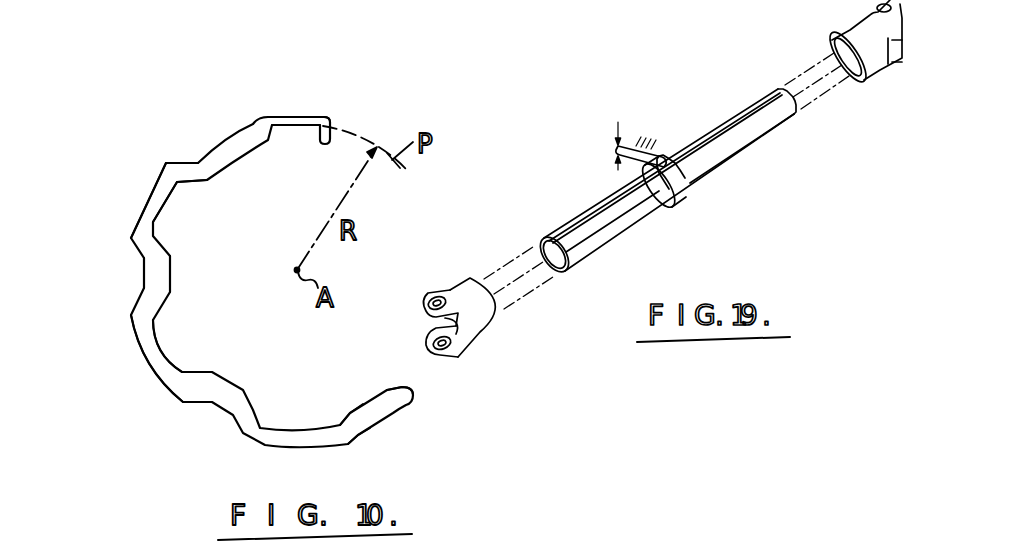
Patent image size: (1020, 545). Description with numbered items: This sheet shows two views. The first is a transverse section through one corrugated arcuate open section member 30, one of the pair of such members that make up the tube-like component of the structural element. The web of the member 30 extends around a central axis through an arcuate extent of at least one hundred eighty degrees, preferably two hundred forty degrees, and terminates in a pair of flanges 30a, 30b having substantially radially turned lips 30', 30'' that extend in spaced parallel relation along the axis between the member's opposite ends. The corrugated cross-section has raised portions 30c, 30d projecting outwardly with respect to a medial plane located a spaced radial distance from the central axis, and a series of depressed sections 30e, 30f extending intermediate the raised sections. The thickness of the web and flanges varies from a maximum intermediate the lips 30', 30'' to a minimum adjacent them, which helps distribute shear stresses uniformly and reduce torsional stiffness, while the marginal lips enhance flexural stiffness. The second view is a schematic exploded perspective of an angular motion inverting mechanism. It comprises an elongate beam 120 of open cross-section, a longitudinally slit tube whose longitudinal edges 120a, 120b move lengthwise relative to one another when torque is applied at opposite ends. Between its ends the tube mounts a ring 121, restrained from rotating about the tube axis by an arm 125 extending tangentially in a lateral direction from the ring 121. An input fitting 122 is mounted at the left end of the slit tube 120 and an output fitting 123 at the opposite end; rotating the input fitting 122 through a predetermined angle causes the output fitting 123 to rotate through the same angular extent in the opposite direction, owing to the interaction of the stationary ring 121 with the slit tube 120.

In FIG. 10, the corrugated arcuate open section member 30 is at (272, 299).
In FIG. 10, the flange 30a is at (316, 107).
In FIG. 10, the radially turned lip 30' is at (355, 111).
In FIG. 10, the radially turned lip 30'' is at (428, 407).
In FIG. 10, the flange 30b is at (396, 476).
In FIG. 10, the raised portion 30c is at (162, 358).
In FIG. 10, the raised portion 30d is at (150, 203).
In FIG. 10, the depressed section 30e is at (153, 272).
In FIG. 10, the depressed section 30f is at (220, 155).
In FIG. 19, the elongate beam of open cross-section 120 is at (635, 202).
In FIG. 19, the longitudinal edge 120a is at (604, 208).
In FIG. 19, the longitudinal edge 120b is at (579, 224).
In FIG. 19, the ring 121 is at (676, 186).
In FIG. 19, the input fitting 122 is at (485, 298).
In FIG. 19, the output fitting 123 is at (868, 60).
In FIG. 19, the arm 125 is at (644, 152).